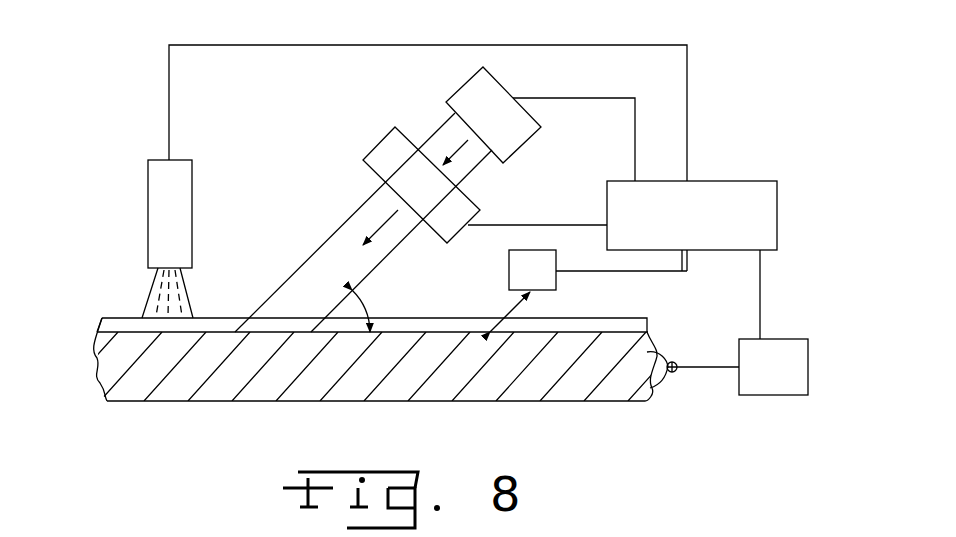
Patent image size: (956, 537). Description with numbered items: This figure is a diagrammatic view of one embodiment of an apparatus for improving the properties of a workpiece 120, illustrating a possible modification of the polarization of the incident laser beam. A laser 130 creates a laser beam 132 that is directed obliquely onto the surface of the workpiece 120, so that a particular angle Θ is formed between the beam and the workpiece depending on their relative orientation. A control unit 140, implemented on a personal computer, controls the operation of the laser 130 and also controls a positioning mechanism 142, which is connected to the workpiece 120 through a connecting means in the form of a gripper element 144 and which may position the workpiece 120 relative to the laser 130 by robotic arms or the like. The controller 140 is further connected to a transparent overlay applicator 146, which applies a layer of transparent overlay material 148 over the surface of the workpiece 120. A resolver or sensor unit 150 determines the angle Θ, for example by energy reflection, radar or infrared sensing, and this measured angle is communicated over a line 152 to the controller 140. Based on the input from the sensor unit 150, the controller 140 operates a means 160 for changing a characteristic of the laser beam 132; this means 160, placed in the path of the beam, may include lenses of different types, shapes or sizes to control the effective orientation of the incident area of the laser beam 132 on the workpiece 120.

The workpiece 120 is at (127, 400).
The laser 130 is at (537, 138).
The laser beam 132 is at (467, 168).
The control unit 140 is at (777, 203).
The positioning mechanism 142 is at (808, 345).
The gripper element 144 is at (665, 378).
The transparent overlay applicator 146 is at (148, 192).
The transparent overlay material 148 is at (148, 296).
The sensor unit 150 is at (556, 281).
The connection line 152 is at (672, 272).
The means for changing a characteristic of the laser beam 160 is at (383, 137).